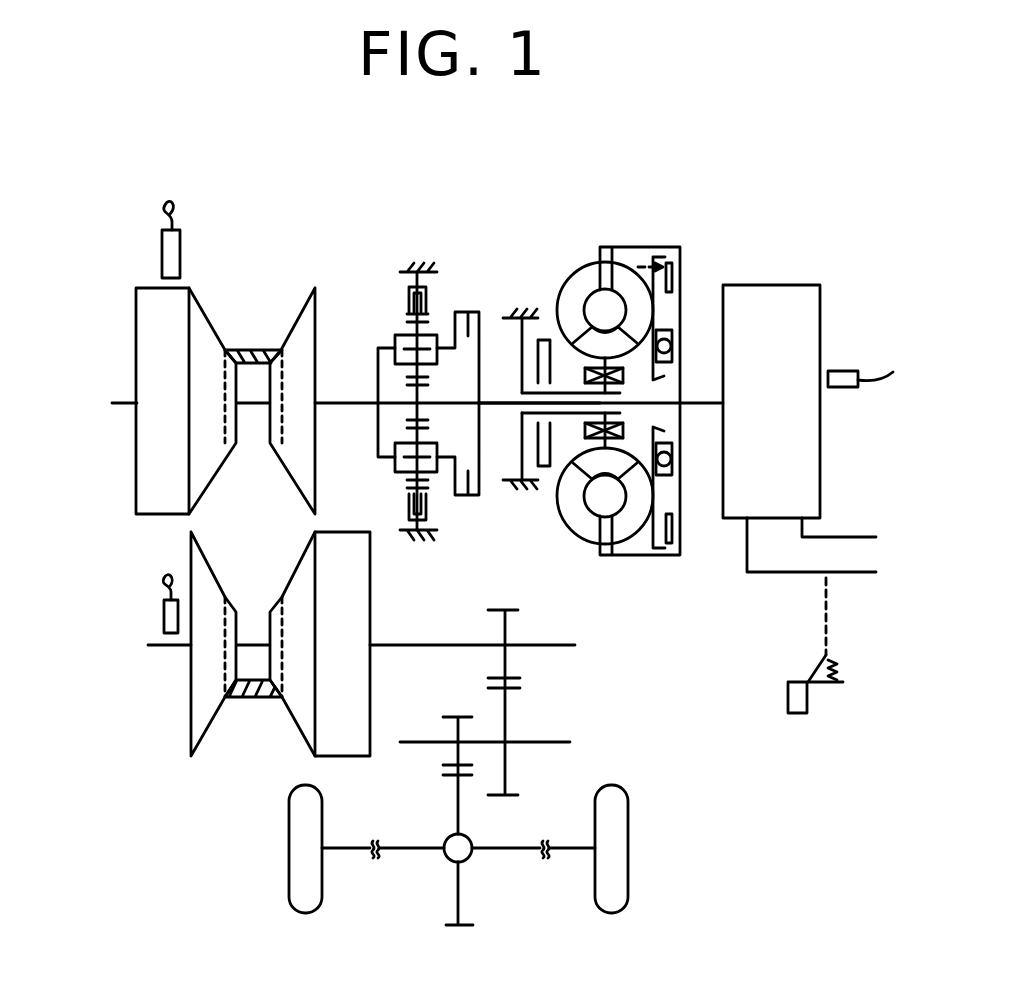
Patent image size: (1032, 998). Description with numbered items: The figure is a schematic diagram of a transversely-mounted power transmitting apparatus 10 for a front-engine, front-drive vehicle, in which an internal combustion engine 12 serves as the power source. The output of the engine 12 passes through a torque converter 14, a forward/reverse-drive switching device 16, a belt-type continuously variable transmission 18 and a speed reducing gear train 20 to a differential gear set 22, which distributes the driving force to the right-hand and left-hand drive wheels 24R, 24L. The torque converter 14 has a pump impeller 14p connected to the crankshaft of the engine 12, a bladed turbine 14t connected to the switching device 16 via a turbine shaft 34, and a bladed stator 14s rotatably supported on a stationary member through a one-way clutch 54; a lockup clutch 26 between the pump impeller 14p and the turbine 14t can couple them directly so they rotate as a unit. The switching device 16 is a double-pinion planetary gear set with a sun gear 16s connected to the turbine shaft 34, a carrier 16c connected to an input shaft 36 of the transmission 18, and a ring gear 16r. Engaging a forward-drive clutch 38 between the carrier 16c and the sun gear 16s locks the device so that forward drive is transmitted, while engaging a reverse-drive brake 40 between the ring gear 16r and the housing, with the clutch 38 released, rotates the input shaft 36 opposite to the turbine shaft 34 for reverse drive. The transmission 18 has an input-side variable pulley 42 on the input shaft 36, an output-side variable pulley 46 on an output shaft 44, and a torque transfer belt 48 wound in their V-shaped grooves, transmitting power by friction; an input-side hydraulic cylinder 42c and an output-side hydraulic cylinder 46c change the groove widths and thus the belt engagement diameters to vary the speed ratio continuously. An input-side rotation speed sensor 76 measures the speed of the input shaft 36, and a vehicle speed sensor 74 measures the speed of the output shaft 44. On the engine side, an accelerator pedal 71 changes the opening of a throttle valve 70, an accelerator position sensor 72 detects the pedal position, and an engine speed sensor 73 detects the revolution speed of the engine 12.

The power transmitting apparatus 10 is at (783, 218).
The internal combustion engine 12 is at (810, 361).
The torque converter 14 is at (631, 396).
The pump impeller 14p is at (578, 520).
The bladed turbine 14t is at (625, 527).
The bladed stator 14s is at (545, 340).
The lockup clutch 26 is at (667, 278).
The one-way clutch 54 is at (570, 347).
The turbine shaft 34 is at (488, 407).
The forward/reverse-drive switching device 16 is at (396, 349).
The carrier 16c is at (397, 338).
The sun gear 16s is at (410, 417).
The ring gear 16r is at (410, 487).
The reverse-drive brake 40 is at (408, 285).
The forward-drive clutch 38 is at (460, 497).
The belt-type continuously variable transmission 18 is at (323, 526).
The input shaft 36 is at (335, 402).
The input-side variable pulley 42 is at (193, 364).
The input-side hydraulic cylinder 42c is at (148, 382).
The torque transfer belt 48 is at (254, 350).
The output-side variable pulley 46 is at (312, 671).
The output-side hydraulic cylinder 46c is at (333, 748).
The output shaft 44 is at (445, 647).
The input-side rotation speed sensor 76 is at (179, 258).
The vehicle speed sensor 74 is at (163, 615).
The speed reducing gear train 20 is at (579, 701).
The differential gear set 22 is at (450, 853).
The left-hand side drive wheel 24L is at (295, 866).
The right-hand side drive wheel 24R is at (622, 863).
The throttle valve 70 is at (823, 554).
The accelerator pedal 71 is at (828, 662).
The accelerator position sensor 72 is at (798, 714).
The engine speed sensor 73 is at (846, 389).